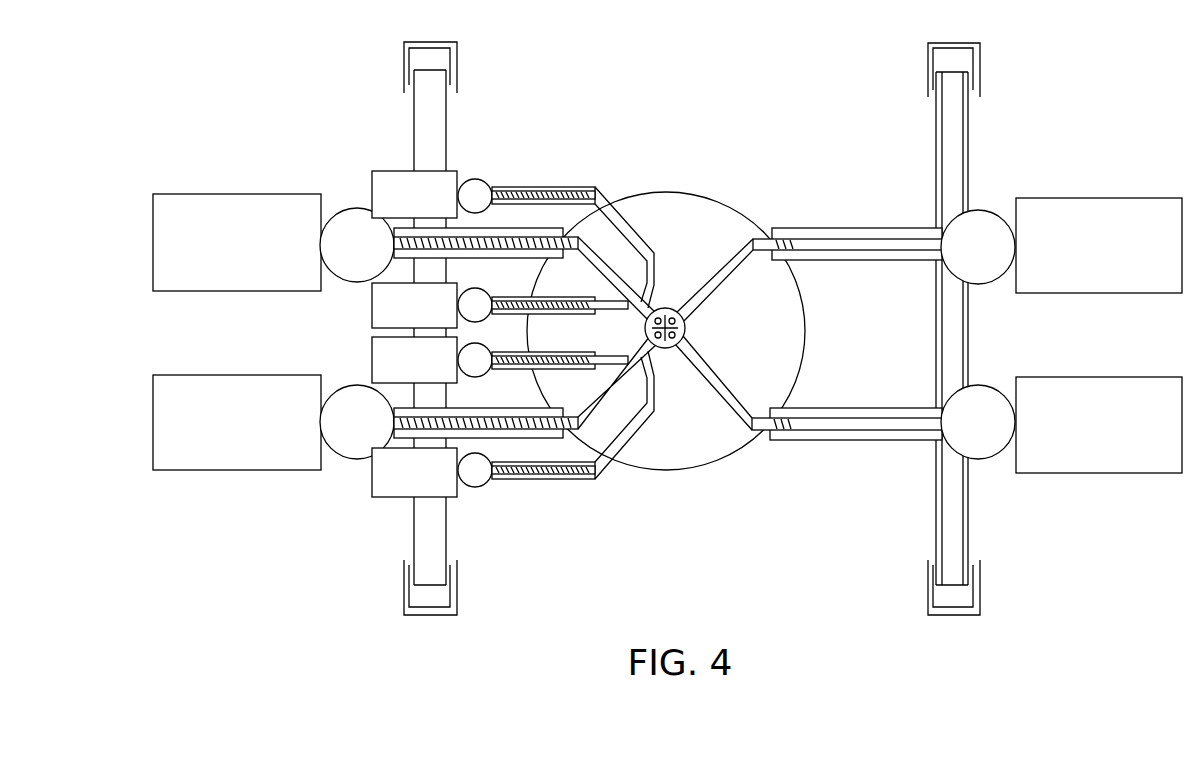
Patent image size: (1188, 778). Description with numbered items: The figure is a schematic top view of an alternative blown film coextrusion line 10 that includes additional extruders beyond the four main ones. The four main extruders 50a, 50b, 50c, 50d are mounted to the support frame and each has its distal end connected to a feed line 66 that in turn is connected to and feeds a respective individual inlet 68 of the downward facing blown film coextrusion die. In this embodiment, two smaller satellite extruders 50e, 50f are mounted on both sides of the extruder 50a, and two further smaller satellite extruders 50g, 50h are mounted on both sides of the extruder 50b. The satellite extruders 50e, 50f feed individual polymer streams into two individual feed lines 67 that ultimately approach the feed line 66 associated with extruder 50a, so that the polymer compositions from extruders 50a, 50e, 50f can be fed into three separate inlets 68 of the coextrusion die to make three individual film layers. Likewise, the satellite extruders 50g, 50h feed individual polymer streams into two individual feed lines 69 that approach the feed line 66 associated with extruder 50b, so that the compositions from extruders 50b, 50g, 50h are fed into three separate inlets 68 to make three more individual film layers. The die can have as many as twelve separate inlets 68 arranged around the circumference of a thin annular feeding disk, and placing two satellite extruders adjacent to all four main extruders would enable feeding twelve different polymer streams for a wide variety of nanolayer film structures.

The blown film coextrusion line 10 is at (1043, 113).
The extruder 50a is at (238, 470).
The extruder 50b is at (1105, 473).
The extruder 50c is at (238, 194).
The extruder 50d is at (1107, 198).
The satellite extruder 50e is at (395, 497).
The satellite extruder 50f is at (372, 355).
The satellite extruder 50g is at (372, 302).
The satellite extruder 50h is at (402, 170).
The feed line 66 is at (655, 308).
The feed line 67 is at (636, 467).
The inlet 68 is at (676, 336).
The feed line 69 is at (618, 222).